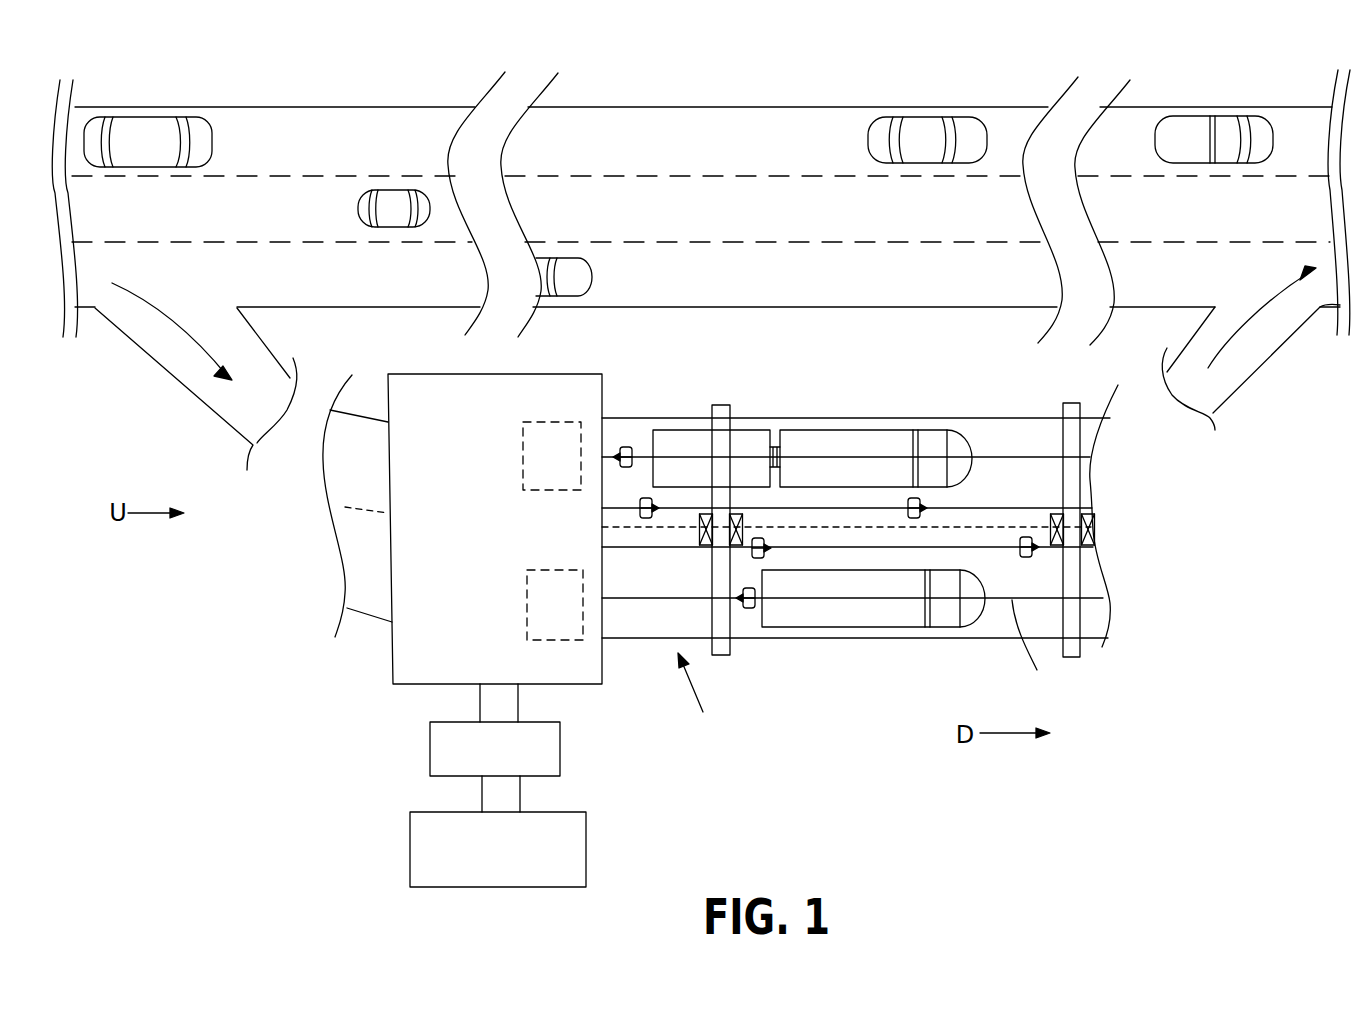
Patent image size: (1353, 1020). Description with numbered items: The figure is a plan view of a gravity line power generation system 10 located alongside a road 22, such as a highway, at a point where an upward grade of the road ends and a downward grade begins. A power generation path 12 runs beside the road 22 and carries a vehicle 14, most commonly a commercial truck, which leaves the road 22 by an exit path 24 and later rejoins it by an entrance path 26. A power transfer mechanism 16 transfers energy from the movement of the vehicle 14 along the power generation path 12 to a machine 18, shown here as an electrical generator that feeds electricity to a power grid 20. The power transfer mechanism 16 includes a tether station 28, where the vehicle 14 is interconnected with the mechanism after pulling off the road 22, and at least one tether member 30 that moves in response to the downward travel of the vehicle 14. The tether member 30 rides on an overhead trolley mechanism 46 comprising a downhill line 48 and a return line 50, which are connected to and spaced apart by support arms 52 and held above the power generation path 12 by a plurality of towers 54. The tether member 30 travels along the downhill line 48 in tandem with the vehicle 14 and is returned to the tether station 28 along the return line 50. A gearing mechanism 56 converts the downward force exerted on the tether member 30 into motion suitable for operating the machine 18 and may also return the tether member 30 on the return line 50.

The gravity line power generation system 10 is at (1192, 74).
The power generation path 12 is at (1008, 433).
The vehicle 14 is at (792, 612).
The power transfer mechanism 16 is at (700, 697).
The machine 18 is at (455, 742).
The power grid 20 is at (438, 832).
The road 22 is at (622, 140).
The exit path 24 is at (157, 332).
The entrance path 26 is at (1255, 345).
The tether station 28 is at (427, 643).
The tether member 30 is at (625, 450).
The overhead trolley mechanism 46 is at (1040, 502).
The downhill line 48 is at (1034, 648).
The return line 50 is at (628, 553).
The support arms 52 is at (1073, 647).
The towers 54 is at (1095, 530).
The gearing mechanism 56 is at (560, 437).